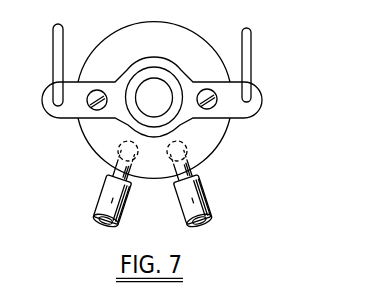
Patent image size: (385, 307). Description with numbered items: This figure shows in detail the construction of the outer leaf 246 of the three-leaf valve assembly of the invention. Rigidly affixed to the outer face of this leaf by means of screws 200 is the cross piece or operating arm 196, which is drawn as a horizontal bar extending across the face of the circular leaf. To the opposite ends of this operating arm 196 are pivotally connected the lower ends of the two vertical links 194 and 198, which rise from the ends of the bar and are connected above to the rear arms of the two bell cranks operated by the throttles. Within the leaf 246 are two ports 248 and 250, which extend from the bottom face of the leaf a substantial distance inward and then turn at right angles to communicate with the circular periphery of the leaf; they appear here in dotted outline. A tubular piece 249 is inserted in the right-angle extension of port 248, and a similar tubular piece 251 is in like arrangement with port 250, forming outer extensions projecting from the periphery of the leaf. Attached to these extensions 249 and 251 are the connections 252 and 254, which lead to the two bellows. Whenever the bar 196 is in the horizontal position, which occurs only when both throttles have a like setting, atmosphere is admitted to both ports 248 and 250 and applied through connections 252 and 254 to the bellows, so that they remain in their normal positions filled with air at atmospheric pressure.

The vertical link 194 is at (53, 28).
The vertical link 198 is at (249, 38).
The operating arm 196 is at (68, 108).
The screws 200 is at (98, 92).
The outer leaf 246 is at (189, 45).
The port 248 is at (121, 153).
The port 250 is at (188, 150).
The tubular piece 249 is at (101, 213).
The tubular piece 251 is at (230, 228).
The connection 252 is at (94, 189).
The connection 254 is at (212, 189).